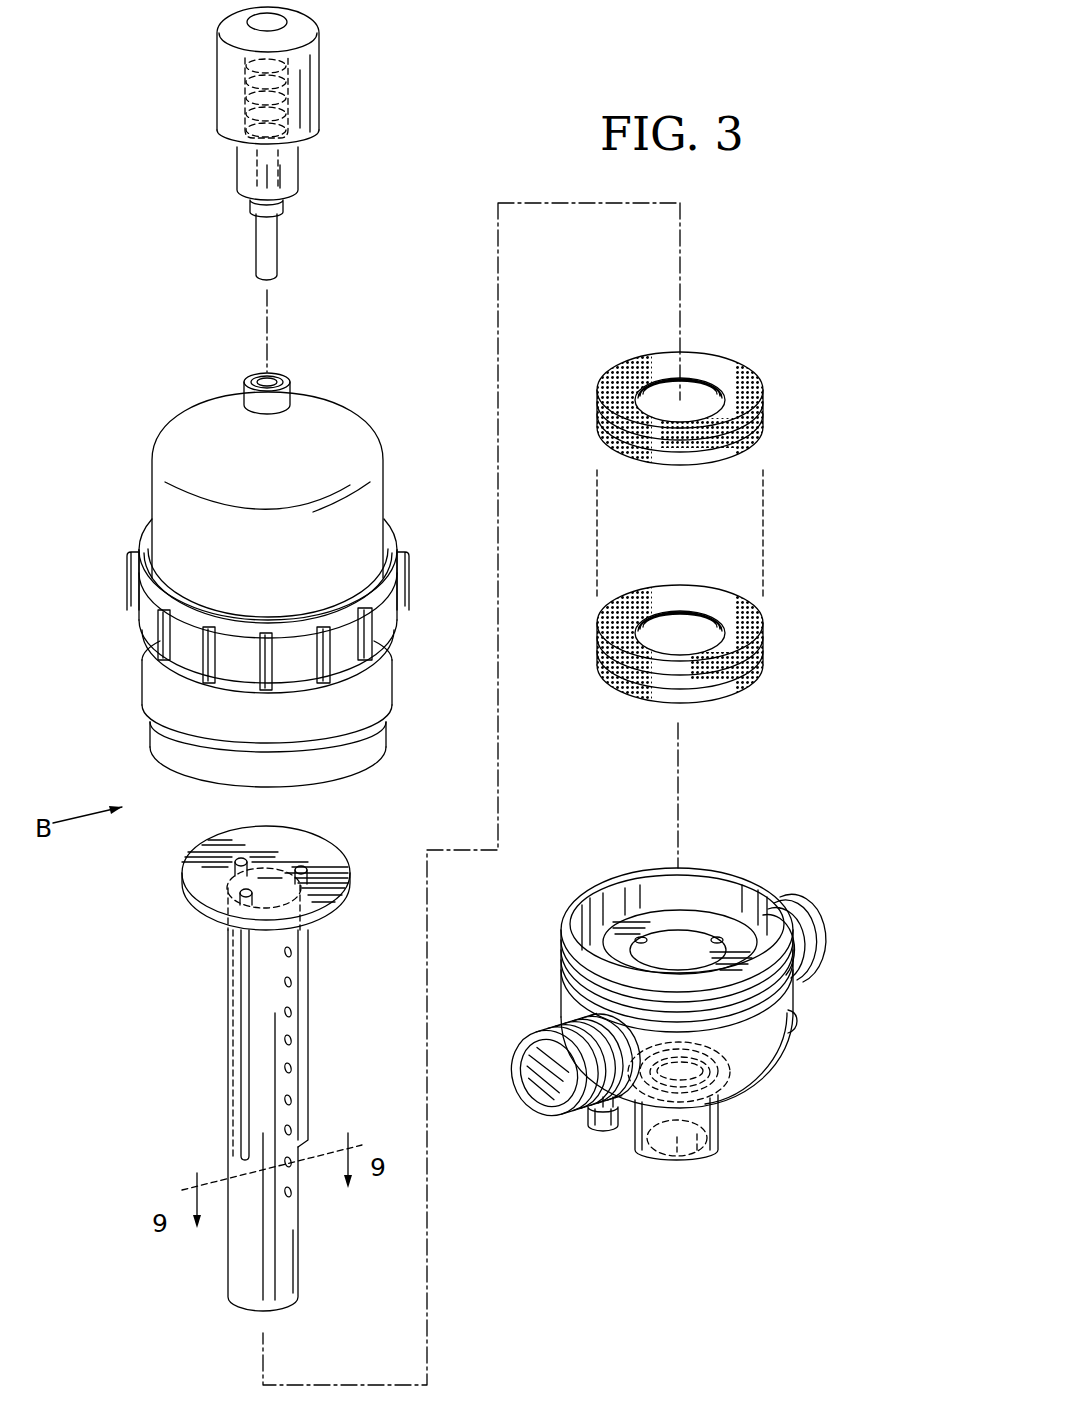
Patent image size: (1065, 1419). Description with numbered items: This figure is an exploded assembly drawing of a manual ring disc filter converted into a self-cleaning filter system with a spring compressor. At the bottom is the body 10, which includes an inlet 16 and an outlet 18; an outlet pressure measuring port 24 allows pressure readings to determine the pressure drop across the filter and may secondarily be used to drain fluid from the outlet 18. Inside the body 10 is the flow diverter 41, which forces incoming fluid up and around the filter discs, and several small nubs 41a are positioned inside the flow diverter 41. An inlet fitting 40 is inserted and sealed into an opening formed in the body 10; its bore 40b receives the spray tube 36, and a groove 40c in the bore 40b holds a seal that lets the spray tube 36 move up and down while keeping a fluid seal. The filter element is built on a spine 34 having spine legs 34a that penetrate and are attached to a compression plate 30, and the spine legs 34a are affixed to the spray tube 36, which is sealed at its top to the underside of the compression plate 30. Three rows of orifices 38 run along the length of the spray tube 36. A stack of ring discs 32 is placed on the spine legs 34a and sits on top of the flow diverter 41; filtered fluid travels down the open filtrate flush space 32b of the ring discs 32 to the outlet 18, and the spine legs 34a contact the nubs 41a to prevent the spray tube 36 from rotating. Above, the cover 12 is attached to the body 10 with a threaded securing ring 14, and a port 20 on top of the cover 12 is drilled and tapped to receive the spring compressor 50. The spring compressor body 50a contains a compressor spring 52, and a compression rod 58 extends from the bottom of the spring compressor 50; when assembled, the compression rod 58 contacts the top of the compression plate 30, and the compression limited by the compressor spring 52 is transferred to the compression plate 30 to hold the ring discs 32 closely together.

The body 10 is at (695, 1011).
The cover 12 is at (217, 444).
The threaded securing ring 14 is at (150, 620).
The inlet 16 is at (828, 948).
The outlet 18 is at (548, 1122).
The port 20 is at (292, 378).
The outlet pressure measuring port 24 is at (597, 1130).
The compression plate 30 is at (200, 884).
The ring discs 32 is at (727, 506).
The filtrate flush space 32b is at (692, 408).
The spine 34 is at (221, 1076).
The spine legs 34a is at (242, 1060).
The spray tube 36 is at (233, 1272).
The orifices 38 is at (182, 1045).
The inlet fitting 40 is at (713, 1128).
The bore 40b is at (656, 1122).
The groove 40c is at (700, 1073).
The flow diverter 41 is at (692, 891).
The nubs 41a is at (712, 936).
The spring compressor 50 is at (286, 143).
The spring compressor body 50a is at (232, 68).
The compressor spring 52 is at (245, 108).
The compression rod 58 is at (260, 238).